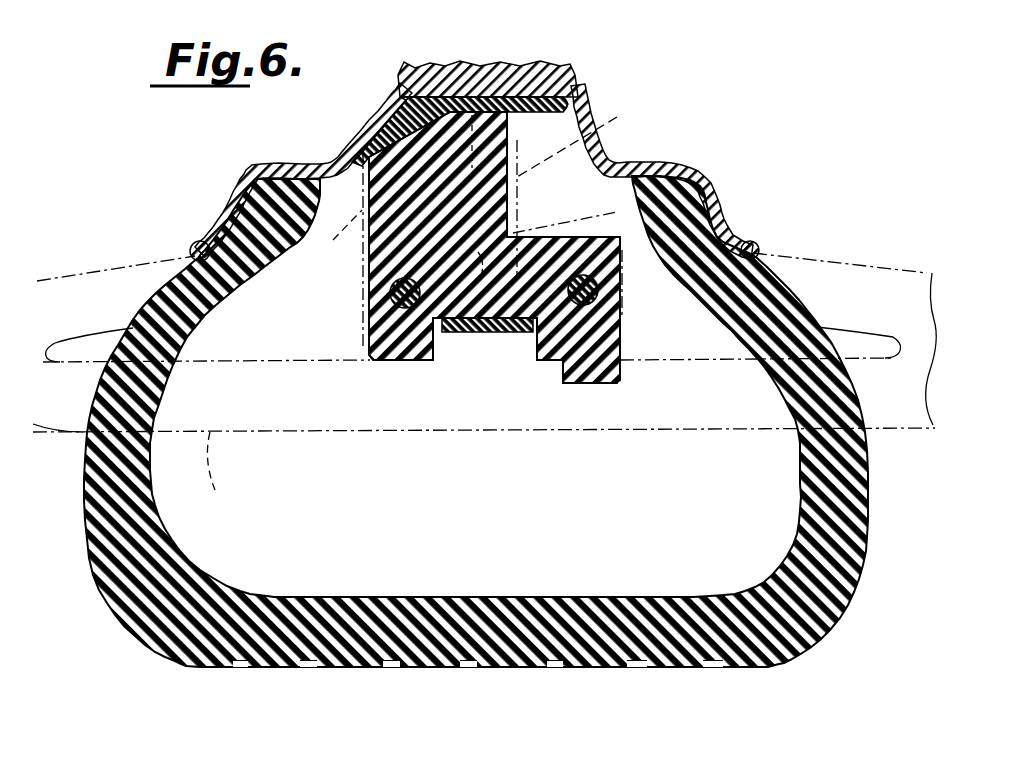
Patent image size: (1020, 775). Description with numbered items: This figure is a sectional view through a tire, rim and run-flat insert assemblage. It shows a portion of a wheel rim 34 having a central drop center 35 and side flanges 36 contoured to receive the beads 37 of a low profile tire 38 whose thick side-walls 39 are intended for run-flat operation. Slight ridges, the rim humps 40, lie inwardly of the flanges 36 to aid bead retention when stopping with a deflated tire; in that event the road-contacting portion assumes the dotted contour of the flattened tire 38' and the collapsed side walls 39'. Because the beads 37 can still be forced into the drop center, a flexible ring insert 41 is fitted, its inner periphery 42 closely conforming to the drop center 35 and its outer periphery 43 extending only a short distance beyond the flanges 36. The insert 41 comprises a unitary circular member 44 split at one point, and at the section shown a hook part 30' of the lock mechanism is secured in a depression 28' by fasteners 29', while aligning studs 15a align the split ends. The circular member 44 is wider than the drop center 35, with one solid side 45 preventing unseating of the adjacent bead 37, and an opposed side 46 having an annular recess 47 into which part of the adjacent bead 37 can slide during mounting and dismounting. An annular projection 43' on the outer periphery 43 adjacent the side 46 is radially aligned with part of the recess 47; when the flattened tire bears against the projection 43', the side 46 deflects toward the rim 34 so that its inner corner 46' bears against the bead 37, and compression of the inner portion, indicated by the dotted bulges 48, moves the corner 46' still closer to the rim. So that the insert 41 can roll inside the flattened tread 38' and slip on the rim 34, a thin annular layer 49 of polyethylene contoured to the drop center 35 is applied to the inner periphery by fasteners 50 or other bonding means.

The wheel rim 34 is at (440, 64).
The central drop center 35 is at (508, 97).
The inner periphery 42 is at (530, 96).
The thin annular layer 49 is at (588, 112).
The dotted bulges 48 is at (471, 182).
The rim humps 40 is at (323, 160).
The beads 37 is at (257, 200).
The side flanges 36 is at (230, 217).
The thick side-walls 39 is at (481, 421).
The collapsed side walls 39' is at (484, 325).
The low profile tire 38 is at (491, 685).
The flattened tire tread 38' is at (231, 473).
The circular member 44 is at (383, 187).
The solid side 45 is at (367, 277).
The opposed side 46 is at (593, 308).
The inner corner 46' is at (565, 212).
The annular recess 47 is at (520, 190).
The fasteners 50 is at (388, 106).
The aligning studs 15a is at (392, 298).
The fasteners 29' is at (472, 337).
The depression 28' is at (501, 362).
The hook part 30' is at (456, 361).
The flexible ring insert 41 is at (390, 362).
The outer periphery 43 is at (397, 387).
The annular projection 43' is at (590, 430).